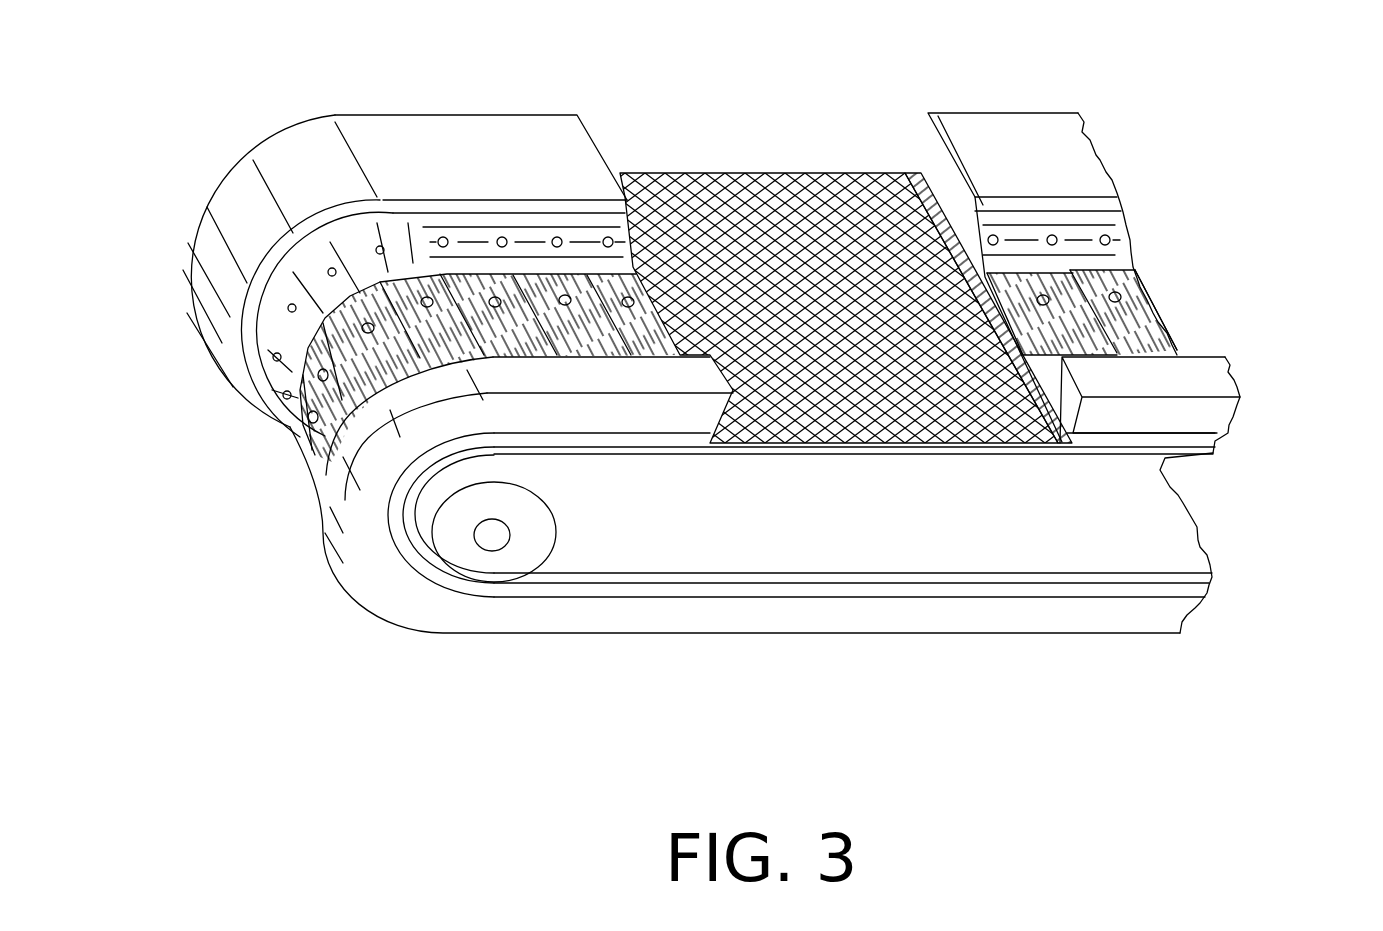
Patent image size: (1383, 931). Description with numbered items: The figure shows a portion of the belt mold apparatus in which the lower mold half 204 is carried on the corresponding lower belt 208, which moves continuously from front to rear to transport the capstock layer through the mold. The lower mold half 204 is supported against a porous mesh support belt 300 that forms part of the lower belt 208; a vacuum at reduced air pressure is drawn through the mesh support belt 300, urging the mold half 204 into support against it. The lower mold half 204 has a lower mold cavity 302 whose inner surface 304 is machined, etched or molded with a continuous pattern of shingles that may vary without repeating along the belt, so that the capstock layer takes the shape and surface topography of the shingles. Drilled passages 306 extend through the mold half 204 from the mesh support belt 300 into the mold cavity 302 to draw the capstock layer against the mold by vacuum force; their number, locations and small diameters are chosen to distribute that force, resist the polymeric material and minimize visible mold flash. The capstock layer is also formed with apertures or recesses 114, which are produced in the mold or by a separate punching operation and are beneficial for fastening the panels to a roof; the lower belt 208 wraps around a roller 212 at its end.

The apertures or recesses 114 is at (503, 235).
The lower mold half 204 is at (247, 212).
The lower belt 208 is at (710, 533).
The roller 212 is at (477, 570).
The porous mesh support belt 300 is at (983, 450).
The lower mold cavity 302 is at (1147, 334).
The inner surface 304 is at (1125, 283).
The drilled passages 306 is at (606, 292).